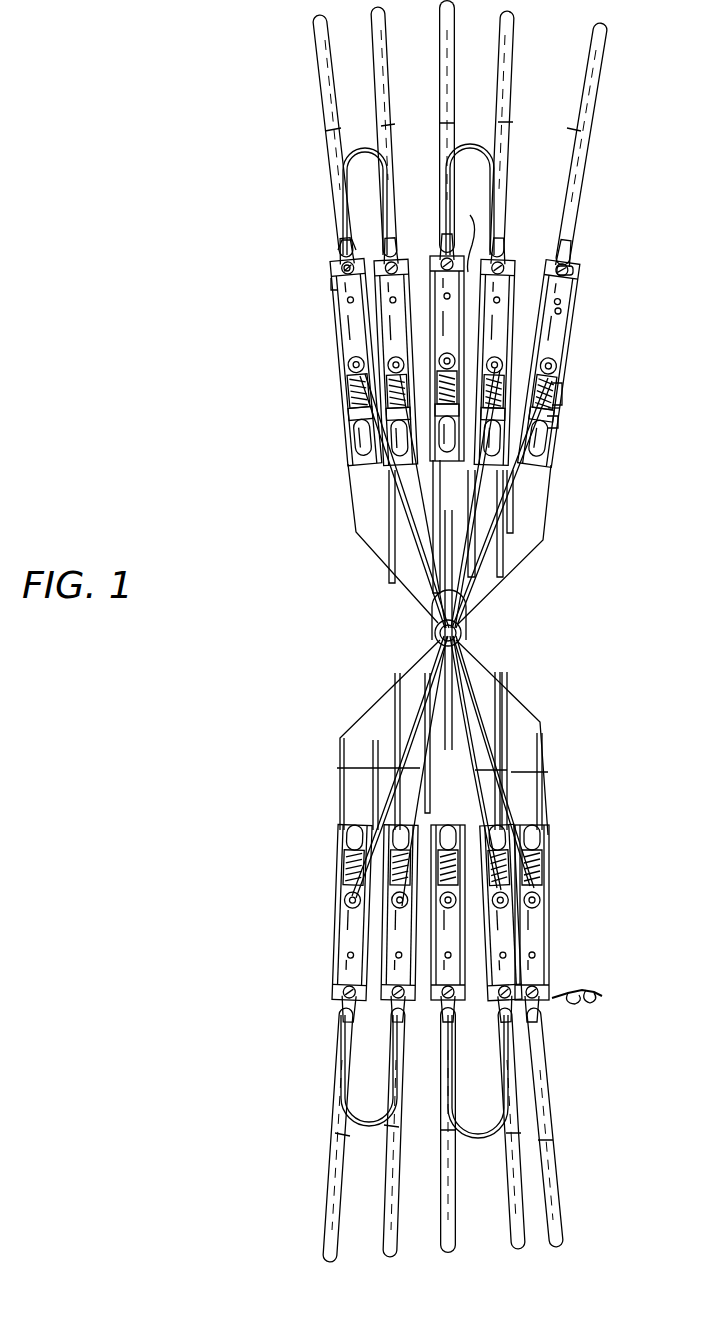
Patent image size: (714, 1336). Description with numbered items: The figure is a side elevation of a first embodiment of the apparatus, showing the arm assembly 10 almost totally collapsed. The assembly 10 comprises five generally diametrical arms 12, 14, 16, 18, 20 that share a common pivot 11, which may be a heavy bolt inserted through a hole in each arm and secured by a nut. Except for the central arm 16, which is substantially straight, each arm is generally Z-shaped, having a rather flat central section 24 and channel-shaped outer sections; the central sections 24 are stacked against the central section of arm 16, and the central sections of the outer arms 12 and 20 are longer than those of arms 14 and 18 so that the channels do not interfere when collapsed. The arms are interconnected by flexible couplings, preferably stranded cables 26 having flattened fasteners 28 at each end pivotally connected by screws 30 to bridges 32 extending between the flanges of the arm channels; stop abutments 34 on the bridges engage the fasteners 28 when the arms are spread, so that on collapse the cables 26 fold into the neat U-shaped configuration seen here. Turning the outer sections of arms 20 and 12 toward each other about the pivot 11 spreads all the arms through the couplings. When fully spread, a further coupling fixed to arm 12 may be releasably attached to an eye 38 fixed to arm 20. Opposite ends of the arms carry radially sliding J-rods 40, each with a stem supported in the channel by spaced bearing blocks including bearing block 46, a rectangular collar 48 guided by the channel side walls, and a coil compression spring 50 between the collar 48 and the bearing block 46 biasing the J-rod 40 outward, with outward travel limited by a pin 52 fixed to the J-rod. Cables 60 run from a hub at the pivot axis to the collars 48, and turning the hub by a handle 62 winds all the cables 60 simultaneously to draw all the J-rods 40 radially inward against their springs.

The arm assembly 10 is at (582, 610).
The pivot 11 is at (470, 634).
The arm 12 is at (350, 471).
The arm 14 is at (378, 349).
The central arm 16 is at (430, 302).
The arm 18 is at (520, 301).
The arm 20 is at (578, 350).
The central section 24 is at (532, 553).
The stranded cable 26 is at (350, 147).
The flattened fastener 28 is at (345, 262).
The screw 30 is at (340, 273).
The bridge 32 is at (335, 286).
The stop abutment 34 is at (480, 232).
The eye 38 is at (570, 268).
The J-rod 40 is at (604, 73).
The bearing block 46 is at (555, 431).
The collar 48 is at (560, 386).
The coil compression spring 50 is at (558, 408).
The pin 52 is at (562, 312).
The cable 60 is at (528, 462).
The handle 62 is at (456, 664).